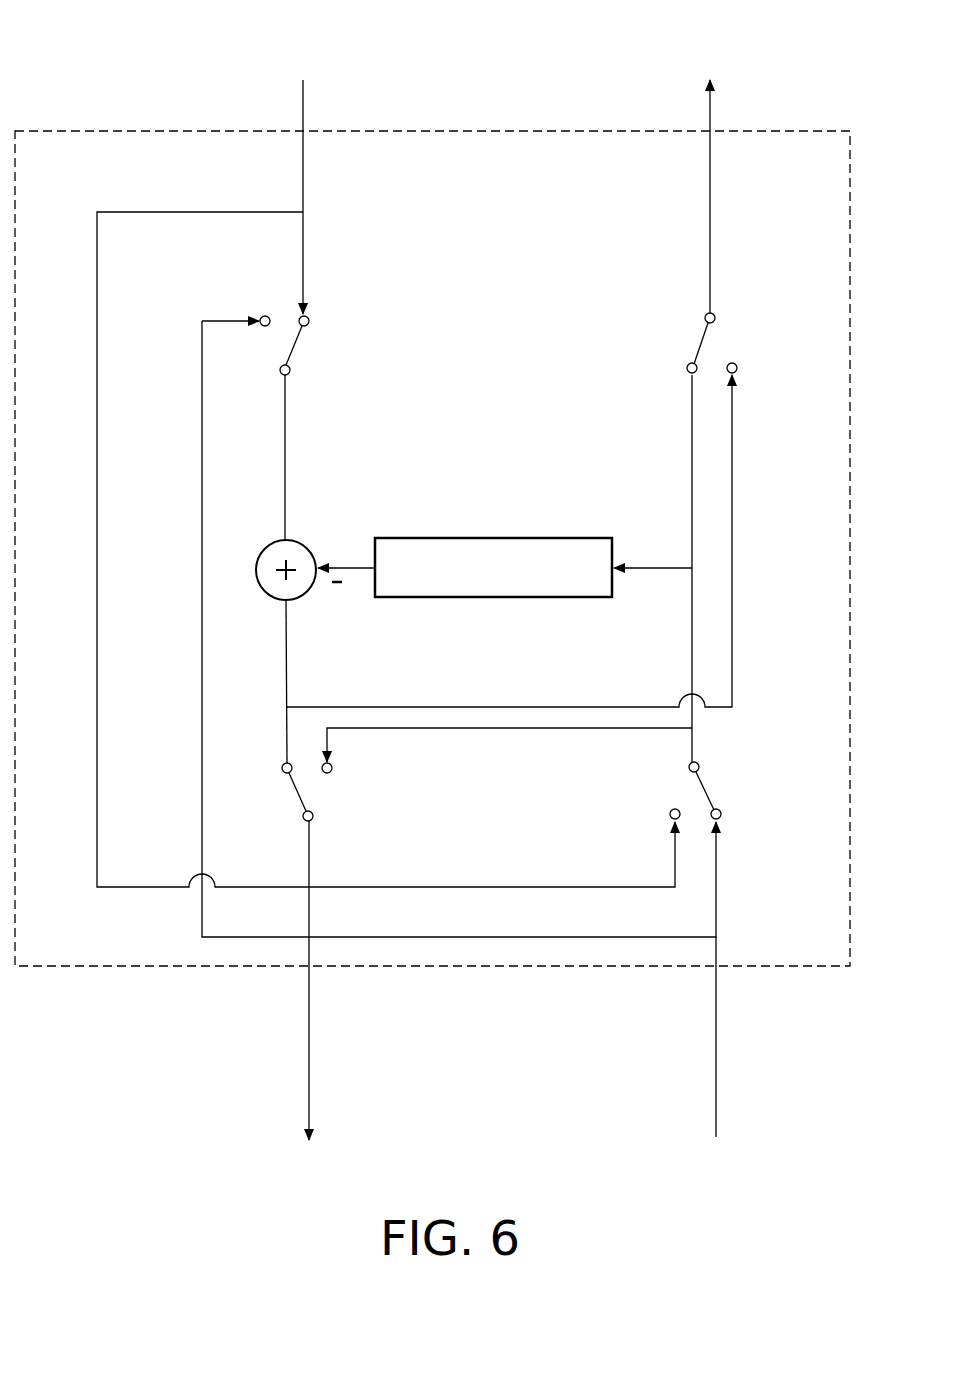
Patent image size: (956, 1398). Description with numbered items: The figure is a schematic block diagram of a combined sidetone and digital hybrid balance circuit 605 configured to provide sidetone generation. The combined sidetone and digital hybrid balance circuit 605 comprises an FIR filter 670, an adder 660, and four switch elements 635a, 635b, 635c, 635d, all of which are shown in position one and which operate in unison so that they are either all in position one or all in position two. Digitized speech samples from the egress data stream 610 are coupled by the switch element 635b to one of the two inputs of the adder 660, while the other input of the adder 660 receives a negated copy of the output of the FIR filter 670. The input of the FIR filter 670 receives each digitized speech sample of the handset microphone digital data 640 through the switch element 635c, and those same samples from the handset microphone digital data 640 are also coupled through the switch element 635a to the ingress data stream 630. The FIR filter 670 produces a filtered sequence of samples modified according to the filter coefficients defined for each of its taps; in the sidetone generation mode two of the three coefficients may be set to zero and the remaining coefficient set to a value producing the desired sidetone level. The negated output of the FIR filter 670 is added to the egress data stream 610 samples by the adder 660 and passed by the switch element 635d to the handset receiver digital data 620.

The combined sidetone and digital hybrid balance circuit 605 is at (182, 131).
The egress data stream 610 is at (302, 163).
The handset receiver digital data 620 is at (319, 1021).
The ingress data stream 630 is at (707, 161).
The handset microphone digital data 640 is at (717, 1079).
The switch element 635a is at (734, 355).
The switch element 635b is at (306, 332).
The switch element 635c is at (712, 799).
The switch element 635d is at (330, 787).
The adder 660 is at (310, 535).
The FIR filter 670 is at (465, 567).